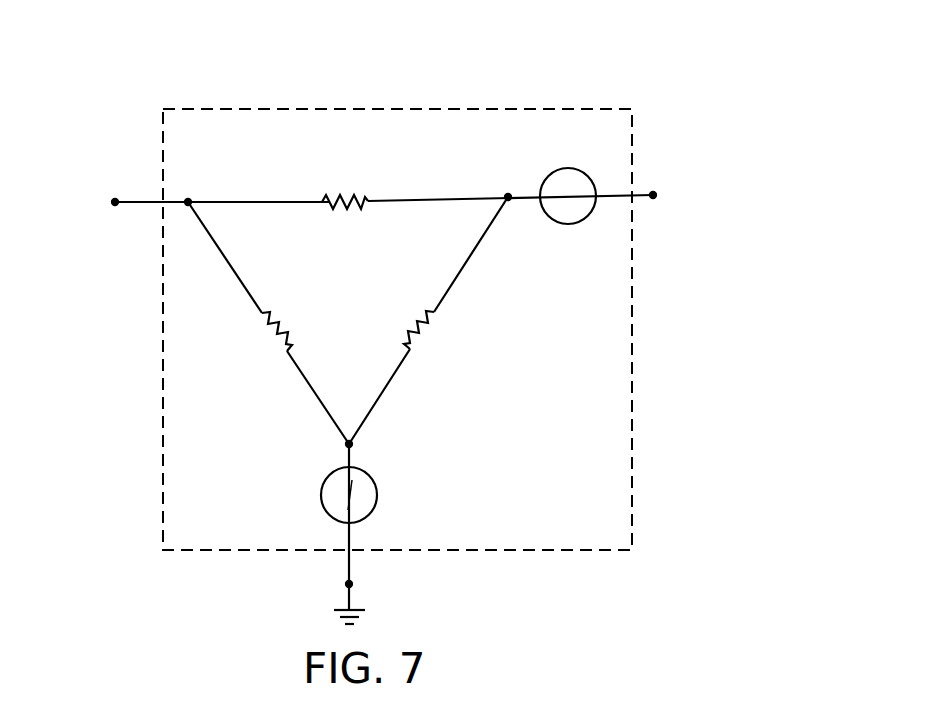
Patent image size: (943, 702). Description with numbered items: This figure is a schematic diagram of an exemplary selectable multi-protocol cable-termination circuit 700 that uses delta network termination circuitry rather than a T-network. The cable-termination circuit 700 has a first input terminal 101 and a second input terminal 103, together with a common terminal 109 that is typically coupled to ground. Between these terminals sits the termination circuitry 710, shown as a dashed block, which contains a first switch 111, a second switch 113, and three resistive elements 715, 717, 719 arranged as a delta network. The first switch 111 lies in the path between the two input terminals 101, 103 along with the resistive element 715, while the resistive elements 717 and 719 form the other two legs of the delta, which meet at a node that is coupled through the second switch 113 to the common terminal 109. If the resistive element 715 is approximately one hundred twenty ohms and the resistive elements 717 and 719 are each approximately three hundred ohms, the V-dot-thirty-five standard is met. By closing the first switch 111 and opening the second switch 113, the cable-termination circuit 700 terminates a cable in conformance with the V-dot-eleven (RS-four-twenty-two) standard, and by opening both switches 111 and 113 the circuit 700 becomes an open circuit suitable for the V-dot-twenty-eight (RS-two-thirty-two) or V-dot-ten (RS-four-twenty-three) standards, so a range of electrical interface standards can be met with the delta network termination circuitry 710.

The cable-termination circuit 700 is at (703, 89).
The termination circuitry 710 is at (634, 340).
The first input terminal 101 is at (112, 202).
The second input terminal 103 is at (656, 195).
The common terminal 109 is at (346, 585).
The first switch 111 is at (550, 176).
The second switch 113 is at (321, 497).
The resistive element 715 is at (347, 190).
The resistive element 717 is at (263, 336).
The resistive element 719 is at (438, 333).